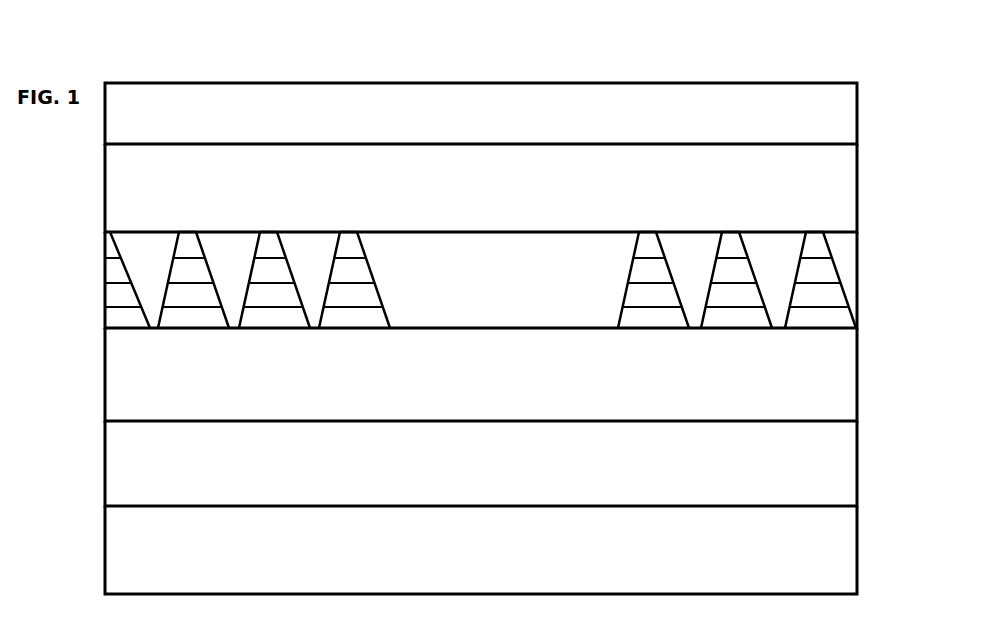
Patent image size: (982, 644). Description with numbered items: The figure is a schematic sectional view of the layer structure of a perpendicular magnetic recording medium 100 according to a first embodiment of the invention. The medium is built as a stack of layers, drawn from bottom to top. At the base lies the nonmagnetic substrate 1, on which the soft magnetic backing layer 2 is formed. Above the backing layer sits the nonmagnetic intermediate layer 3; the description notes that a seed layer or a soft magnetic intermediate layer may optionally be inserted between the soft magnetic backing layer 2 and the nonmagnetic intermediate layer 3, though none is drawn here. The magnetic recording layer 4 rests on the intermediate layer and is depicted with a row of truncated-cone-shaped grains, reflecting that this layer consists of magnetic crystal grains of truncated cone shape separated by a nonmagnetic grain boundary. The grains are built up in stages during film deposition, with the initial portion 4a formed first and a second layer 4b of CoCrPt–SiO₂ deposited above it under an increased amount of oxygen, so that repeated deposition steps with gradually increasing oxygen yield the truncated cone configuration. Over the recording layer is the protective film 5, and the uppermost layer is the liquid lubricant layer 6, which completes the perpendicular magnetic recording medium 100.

The perpendicular magnetic recording medium 100 is at (789, 73).
The liquid lubricant layer 6 is at (847, 115).
The protective film 5 is at (847, 186).
The magnetic recording layer 4 is at (848, 273).
The magnetic crystal grain 4a is at (840, 318).
The second layer 4b is at (832, 250).
The nonmagnetic intermediate layer 3 is at (848, 379).
The soft magnetic backing layer 2 is at (848, 459).
The nonmagnetic substrate 1 is at (848, 549).